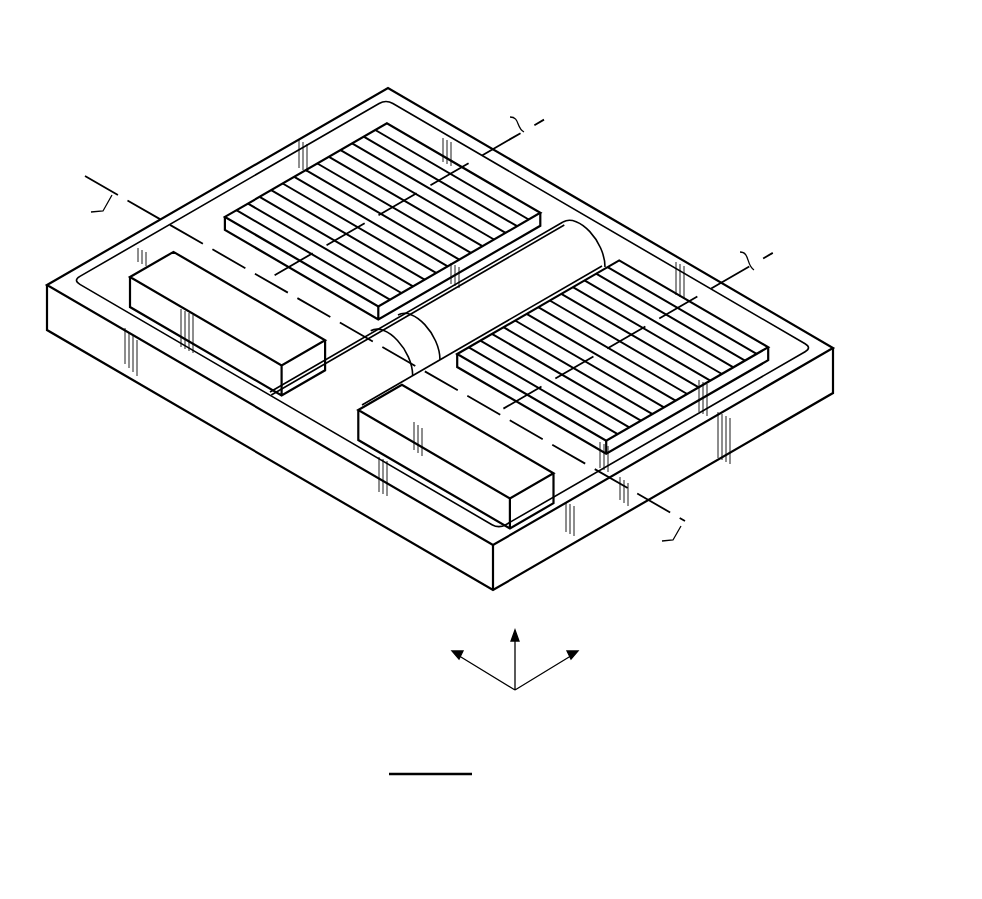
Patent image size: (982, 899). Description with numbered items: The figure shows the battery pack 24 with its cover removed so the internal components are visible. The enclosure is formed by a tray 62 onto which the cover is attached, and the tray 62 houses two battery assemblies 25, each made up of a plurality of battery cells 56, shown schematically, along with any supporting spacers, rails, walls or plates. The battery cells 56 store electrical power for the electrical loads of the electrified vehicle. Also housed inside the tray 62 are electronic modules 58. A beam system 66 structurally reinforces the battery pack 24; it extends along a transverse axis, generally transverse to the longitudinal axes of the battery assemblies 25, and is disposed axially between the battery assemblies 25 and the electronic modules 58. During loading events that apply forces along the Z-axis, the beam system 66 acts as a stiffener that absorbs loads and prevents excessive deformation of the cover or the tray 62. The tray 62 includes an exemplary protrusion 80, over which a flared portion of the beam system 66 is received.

The battery pack 24 is at (246, 95).
The battery assembly 25 is at (418, 158).
The battery cells 56 is at (337, 168).
The electronic modules 58 is at (227, 313).
The tray 62 is at (531, 571).
The beam system 66 is at (181, 222).
The protrusion 80 is at (562, 245).